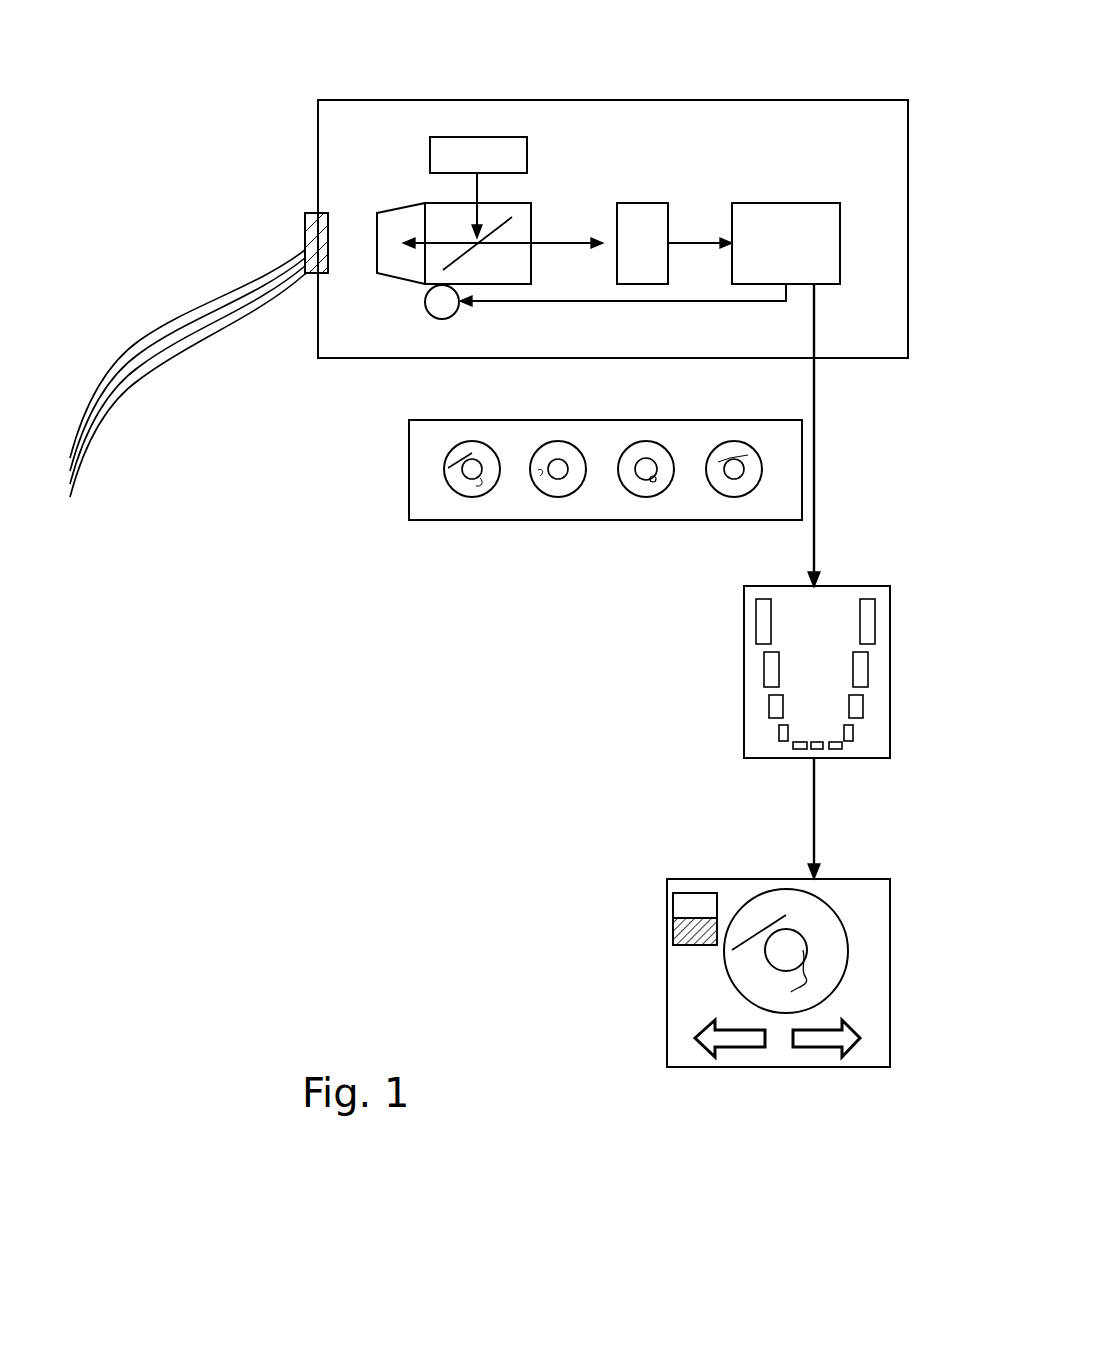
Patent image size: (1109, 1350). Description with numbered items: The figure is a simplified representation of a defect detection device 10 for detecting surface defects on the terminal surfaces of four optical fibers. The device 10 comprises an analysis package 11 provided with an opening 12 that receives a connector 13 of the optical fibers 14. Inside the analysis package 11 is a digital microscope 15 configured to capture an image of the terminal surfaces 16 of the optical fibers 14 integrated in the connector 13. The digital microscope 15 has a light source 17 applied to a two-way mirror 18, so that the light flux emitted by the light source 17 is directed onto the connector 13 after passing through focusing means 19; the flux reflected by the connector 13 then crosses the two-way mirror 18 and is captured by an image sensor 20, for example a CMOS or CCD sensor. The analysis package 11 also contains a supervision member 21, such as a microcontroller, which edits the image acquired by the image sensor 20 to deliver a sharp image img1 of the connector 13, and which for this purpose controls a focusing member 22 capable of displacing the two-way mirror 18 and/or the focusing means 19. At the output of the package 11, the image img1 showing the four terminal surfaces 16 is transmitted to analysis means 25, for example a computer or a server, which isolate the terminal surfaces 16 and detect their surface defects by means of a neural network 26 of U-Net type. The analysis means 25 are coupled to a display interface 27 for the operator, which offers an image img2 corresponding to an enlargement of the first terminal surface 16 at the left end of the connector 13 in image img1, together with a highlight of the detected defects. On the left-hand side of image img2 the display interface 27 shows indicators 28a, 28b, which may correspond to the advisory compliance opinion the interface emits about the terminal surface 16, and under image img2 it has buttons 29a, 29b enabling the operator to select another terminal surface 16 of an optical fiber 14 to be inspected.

The defect detection device 10 is at (349, 646).
The analysis package 11 is at (651, 100).
The opening 12 is at (305, 213).
The connector 13 is at (305, 276).
The optical fibers 14 is at (167, 370).
The digital microscope 15 is at (582, 172).
The terminal surfaces 16 is at (460, 490).
The light source 17 is at (480, 160).
The two-way mirror 18 is at (522, 275).
The focusing means 19 is at (393, 222).
The image sensor 20 is at (655, 265).
The supervision member 21 is at (820, 225).
The focusing member 22 is at (433, 303).
The analysis means 25 is at (744, 673).
The neural network 26 is at (877, 714).
The display interface 27 is at (673, 878).
The status indicator 28a is at (673, 898).
The status indicator 28b is at (673, 938).
The button 29a is at (730, 1042).
The button 29b is at (818, 1042).
The image img1 is at (409, 493).
The image img2 is at (843, 947).